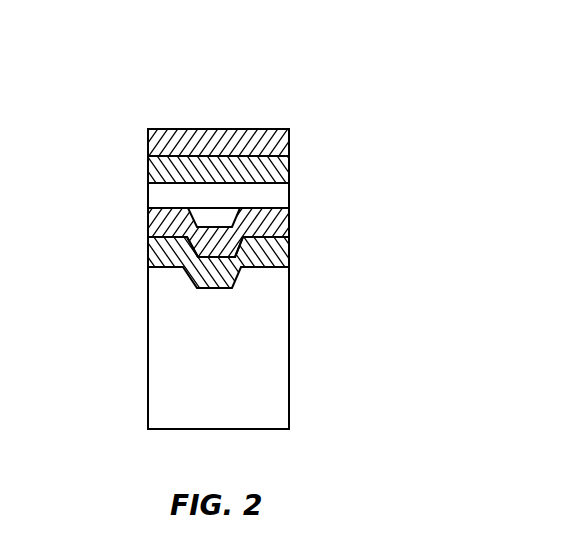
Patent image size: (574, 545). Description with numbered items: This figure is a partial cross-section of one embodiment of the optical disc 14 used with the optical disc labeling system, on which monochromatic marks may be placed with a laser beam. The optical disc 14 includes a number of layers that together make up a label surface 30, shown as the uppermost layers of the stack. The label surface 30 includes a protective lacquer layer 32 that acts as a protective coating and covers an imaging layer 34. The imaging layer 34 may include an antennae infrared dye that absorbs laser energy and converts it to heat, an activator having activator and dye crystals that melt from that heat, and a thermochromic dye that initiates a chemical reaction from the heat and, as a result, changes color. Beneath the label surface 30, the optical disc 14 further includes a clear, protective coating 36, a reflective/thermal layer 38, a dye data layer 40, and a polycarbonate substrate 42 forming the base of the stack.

The optical disc 14 is at (136, 108).
The label surface 30 is at (413, 118).
The protective lacquer layer 32 is at (285, 140).
The imaging layer 34 is at (283, 163).
The clear, protective coating 36 is at (278, 190).
The reflective/thermal layer 38 is at (148, 225).
The dye data layer 40 is at (148, 260).
The polycarbonate substrate 42 is at (162, 364).